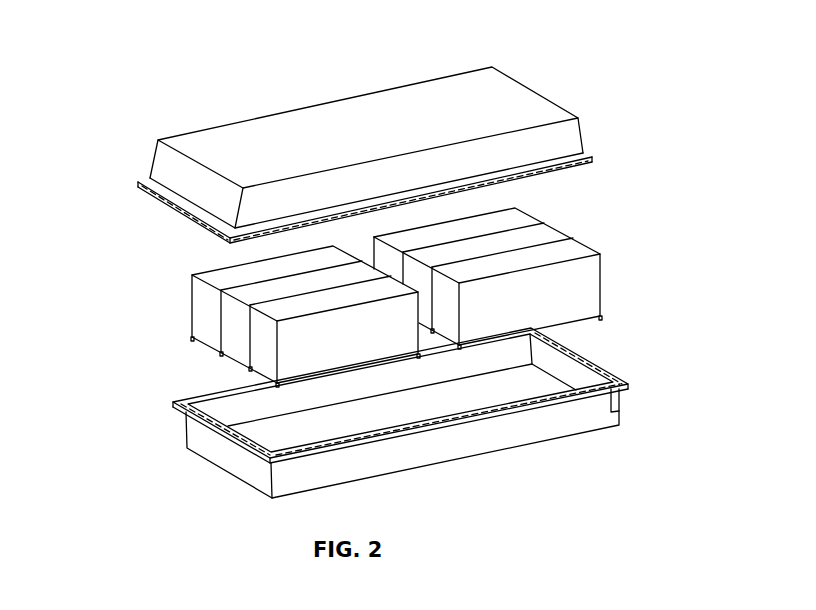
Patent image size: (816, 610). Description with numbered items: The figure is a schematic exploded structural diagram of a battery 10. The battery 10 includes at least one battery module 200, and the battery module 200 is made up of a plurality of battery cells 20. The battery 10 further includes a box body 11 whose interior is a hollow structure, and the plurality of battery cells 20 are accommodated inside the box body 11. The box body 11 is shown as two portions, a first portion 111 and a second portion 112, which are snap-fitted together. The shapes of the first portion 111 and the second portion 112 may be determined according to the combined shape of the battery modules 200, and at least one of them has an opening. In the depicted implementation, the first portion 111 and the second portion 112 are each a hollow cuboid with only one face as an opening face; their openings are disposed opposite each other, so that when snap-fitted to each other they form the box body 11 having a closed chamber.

The battery 10 is at (175, 66).
The box body 11 is at (207, 442).
The first portion 111 is at (390, 101).
The second portion 112 is at (443, 450).
The battery cell 20 is at (213, 305).
The battery module 200 is at (523, 198).